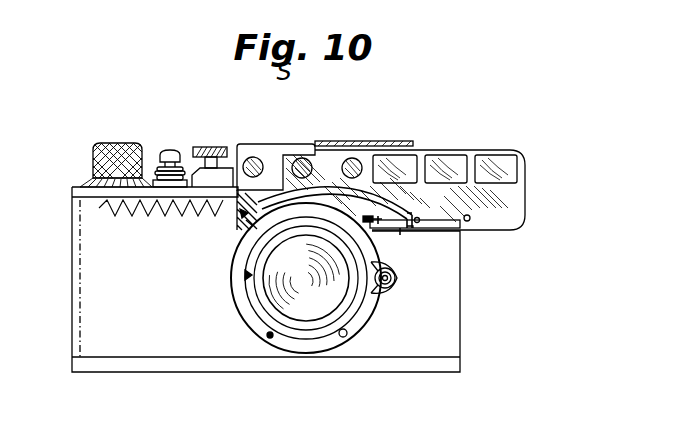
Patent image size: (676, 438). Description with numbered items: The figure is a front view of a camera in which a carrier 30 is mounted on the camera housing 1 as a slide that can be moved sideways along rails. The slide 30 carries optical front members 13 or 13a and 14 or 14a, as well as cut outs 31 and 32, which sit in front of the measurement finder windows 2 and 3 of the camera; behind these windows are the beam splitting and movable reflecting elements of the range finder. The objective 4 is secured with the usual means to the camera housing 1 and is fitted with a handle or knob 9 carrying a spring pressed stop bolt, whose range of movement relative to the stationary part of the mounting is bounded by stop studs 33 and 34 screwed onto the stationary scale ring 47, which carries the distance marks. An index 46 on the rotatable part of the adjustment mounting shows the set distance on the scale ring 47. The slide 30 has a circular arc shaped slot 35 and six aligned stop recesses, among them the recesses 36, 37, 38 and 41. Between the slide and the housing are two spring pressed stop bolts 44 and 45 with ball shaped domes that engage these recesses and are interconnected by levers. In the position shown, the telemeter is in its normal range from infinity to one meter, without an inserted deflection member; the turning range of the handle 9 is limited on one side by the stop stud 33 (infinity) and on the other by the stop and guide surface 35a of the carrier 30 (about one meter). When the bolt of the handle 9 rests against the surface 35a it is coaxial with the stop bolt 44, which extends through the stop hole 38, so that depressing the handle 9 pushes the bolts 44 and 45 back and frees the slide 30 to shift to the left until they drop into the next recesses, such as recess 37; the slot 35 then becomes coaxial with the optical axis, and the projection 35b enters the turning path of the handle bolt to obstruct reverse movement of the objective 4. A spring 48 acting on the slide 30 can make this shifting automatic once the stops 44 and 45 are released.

The camera housing 1 is at (108, 344).
The viewing window 2 is at (418, 152).
The viewing window 3 is at (227, 148).
The objective 4 is at (308, 300).
The handle or knob 9 is at (392, 287).
The optical front member 13 is at (445, 152).
The optical front member 13a is at (520, 152).
The optical front member 14 is at (302, 157).
The optical front member 14a is at (352, 157).
The carrier 30 is at (507, 200).
The cut out 31 is at (367, 148).
The cut out 32 is at (284, 192).
The stop stud 33 is at (345, 338).
The stop stud 34 is at (270, 338).
The circular arc shaped slot 35 is at (375, 232).
The stop and guide surface 35a is at (390, 232).
The projection 35b is at (385, 232).
The stop recess 36 is at (472, 219).
The stop recess 37 is at (380, 232).
The stop recess 38 is at (395, 232).
The stop recess 41 is at (240, 225).
The stop bolt 44 is at (400, 234).
The stop bolt 45 is at (243, 216).
The index 46 is at (245, 276).
The scale ring 47 is at (247, 322).
The spring 48 is at (228, 210).